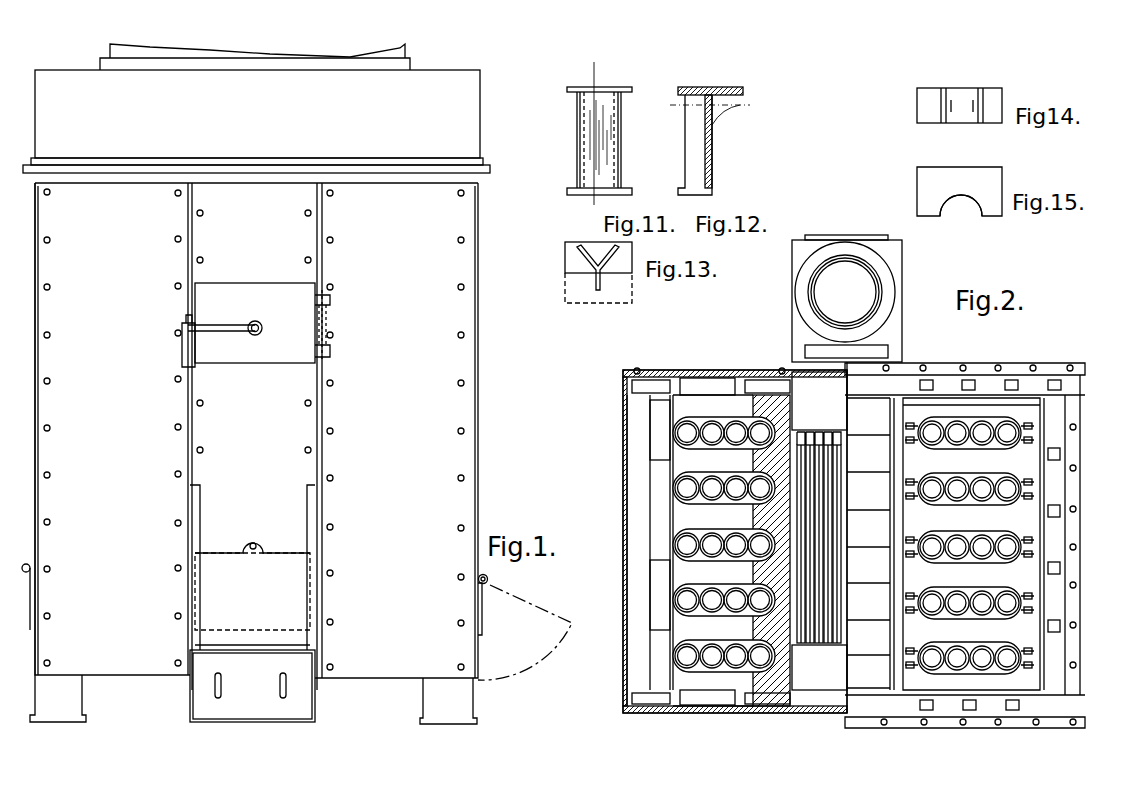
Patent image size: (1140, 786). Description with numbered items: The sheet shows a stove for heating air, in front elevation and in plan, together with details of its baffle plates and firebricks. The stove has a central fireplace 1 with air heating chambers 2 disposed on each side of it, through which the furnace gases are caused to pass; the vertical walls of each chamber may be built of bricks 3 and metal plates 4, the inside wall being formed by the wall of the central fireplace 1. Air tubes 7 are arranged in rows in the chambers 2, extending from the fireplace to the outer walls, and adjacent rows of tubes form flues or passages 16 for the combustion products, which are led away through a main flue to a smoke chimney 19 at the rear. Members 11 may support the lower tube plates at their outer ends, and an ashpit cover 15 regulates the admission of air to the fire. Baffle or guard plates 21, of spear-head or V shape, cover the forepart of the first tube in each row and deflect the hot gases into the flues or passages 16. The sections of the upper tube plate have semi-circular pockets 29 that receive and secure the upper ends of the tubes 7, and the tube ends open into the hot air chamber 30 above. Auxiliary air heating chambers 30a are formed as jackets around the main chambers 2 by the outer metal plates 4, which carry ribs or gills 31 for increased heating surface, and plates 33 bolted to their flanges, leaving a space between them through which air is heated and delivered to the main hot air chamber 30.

In FIG. 1, the central fireplace 1 is at (253, 482).
In FIG. 2, the central fireplace 1 is at (830, 522).
In FIG. 1, the air heating chambers 2 is at (122, 488).
In FIG. 2, the air heating chambers 2 is at (1003, 522).
In FIG. 2, the bricks 3 is at (778, 412).
In FIG. 14, the bricks 3 is at (990, 100).
In FIG. 15, the bricks 3 is at (982, 180).
In FIG. 2, the metal plates 4 is at (672, 540).
In FIG. 2, the air tubes 7 is at (690, 425).
In FIG. 1, the members 11 is at (62, 713).
In FIG. 1, the ashpit cover 15 is at (252, 603).
In FIG. 2, the flues or passages 16 is at (692, 508).
In FIG. 2, the smoke chimney 19 is at (873, 287).
In FIG. 11, the baffle or guard plates 21 is at (594, 158).
In FIG. 12, the baffle or guard plates 21 is at (712, 148).
In FIG. 13, the baffle or guard plates 21 is at (596, 272).
In FIG. 2, the semi-circular pockets 29 is at (1015, 612).
In FIG. 14, the semi-circular pockets 29 is at (957, 100).
In FIG. 15, the semi-circular pockets 29 is at (945, 200).
In FIG. 1, the chamber 30 is at (463, 138).
In FIG. 2, the auxiliary or additional air heating chambers 30a is at (745, 727).
In FIG. 2, the ribs or gills 31 is at (652, 578).
In FIG. 1, the plates 33 is at (480, 375).
In FIG. 2, the plates 33 is at (626, 409).